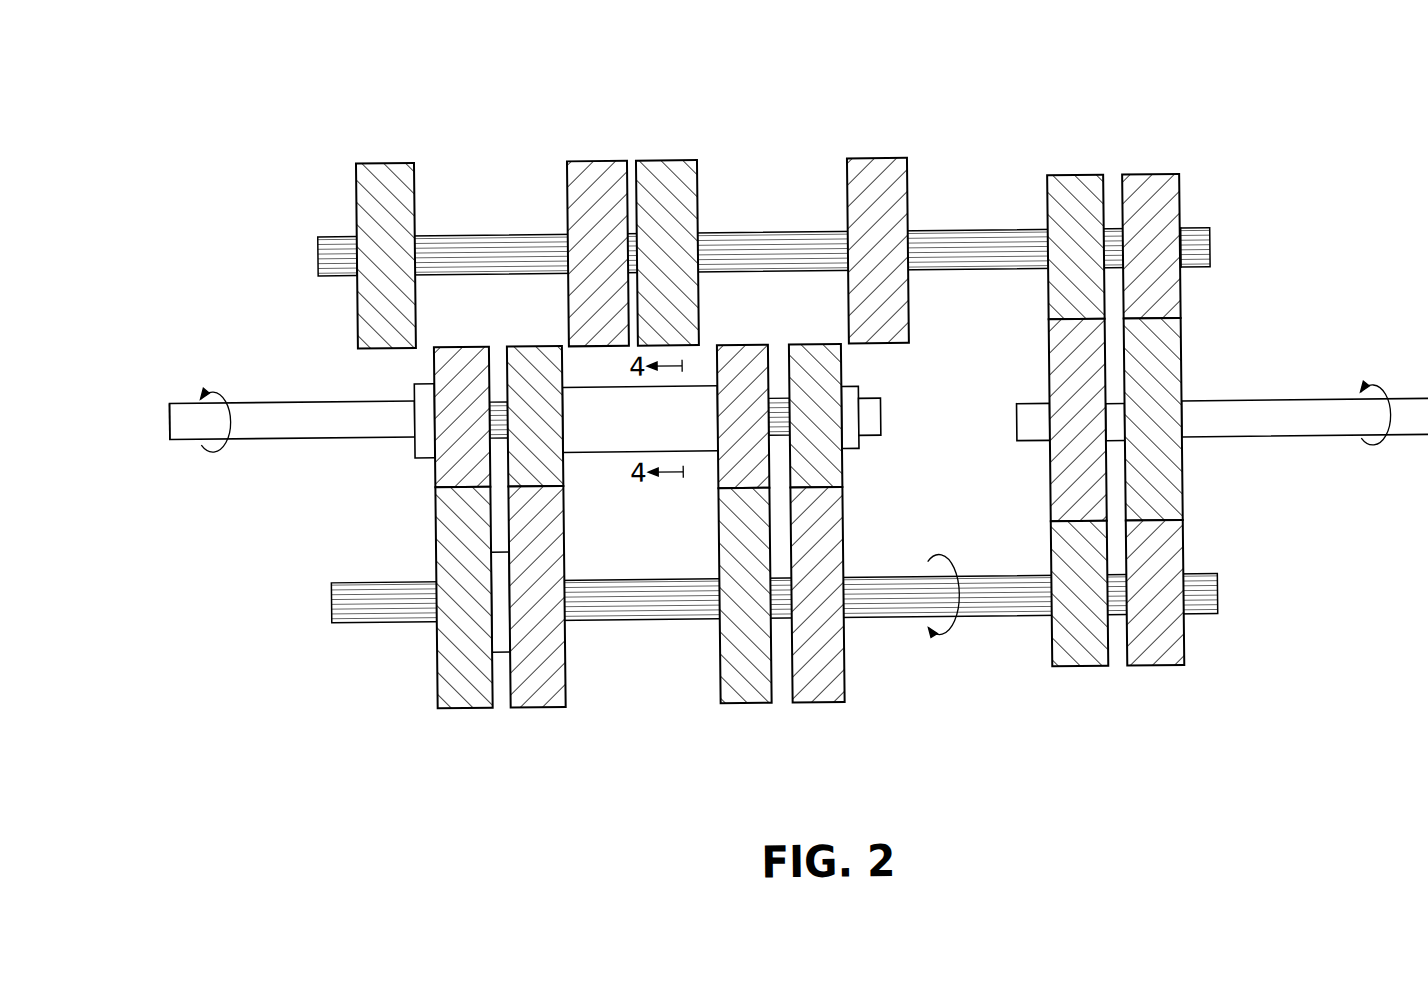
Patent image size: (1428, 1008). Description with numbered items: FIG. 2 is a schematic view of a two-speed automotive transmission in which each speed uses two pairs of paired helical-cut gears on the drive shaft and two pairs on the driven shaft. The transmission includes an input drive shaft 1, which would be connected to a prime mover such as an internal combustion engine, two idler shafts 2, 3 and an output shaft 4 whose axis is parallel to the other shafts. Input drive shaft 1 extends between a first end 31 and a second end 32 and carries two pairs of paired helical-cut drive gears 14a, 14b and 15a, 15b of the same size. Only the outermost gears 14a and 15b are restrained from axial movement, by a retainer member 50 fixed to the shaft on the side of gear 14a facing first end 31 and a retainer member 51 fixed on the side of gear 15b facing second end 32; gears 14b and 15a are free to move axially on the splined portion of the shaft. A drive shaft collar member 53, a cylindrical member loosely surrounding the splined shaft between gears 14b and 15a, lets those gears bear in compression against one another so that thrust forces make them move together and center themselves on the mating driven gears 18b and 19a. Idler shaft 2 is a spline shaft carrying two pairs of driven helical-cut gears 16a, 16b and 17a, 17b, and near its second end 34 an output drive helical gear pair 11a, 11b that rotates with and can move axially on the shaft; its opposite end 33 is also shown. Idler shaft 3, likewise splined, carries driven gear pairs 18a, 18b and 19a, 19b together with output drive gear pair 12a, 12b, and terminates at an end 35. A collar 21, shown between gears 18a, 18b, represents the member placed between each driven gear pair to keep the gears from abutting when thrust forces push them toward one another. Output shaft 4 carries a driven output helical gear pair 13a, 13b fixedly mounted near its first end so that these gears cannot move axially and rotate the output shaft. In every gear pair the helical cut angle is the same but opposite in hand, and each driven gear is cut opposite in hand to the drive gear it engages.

The input drive shaft 1 is at (291, 400).
The idler shaft 2 is at (473, 234).
The idler shaft 3 is at (630, 619).
The output shaft 4 is at (1313, 406).
The output drive helical gear 11a is at (1078, 179).
The output drive helical gear 11b is at (1176, 179).
The output drive helical gear 12a is at (1093, 670).
The output drive helical gear 12b is at (1168, 671).
The driven output helical gear 13a is at (1050, 344).
The driven output helical gear 13b is at (1182, 502).
The drive helical cut gear 14a is at (453, 344).
The drive helical cut gear 14b is at (541, 345).
The drive helical cut gear 15a is at (743, 347).
The drive helical cut gear 15b is at (819, 348).
The driven helical cut gear 16a is at (391, 159).
The driven helical cut gear 16b is at (586, 160).
The driven helical cut gear 17a is at (678, 160).
The driven helical cut gear 17b is at (876, 160).
The driven helical cut gear 18a is at (455, 706).
The driven helical cut gear 18b is at (545, 706).
The driven helical cut gear 19a is at (742, 704).
The driven helical cut gear 19b is at (822, 704).
The collar 21 is at (501, 650).
The first end 31 is at (170, 412).
The second end 32 is at (882, 420).
The shaft end 33 is at (320, 249).
The second end 34 is at (1216, 254).
The shaft end 35 is at (1012, 433).
The retainer member 50 is at (415, 455).
The retainer member 51 is at (848, 451).
The drive shaft collar member 53 is at (590, 451).